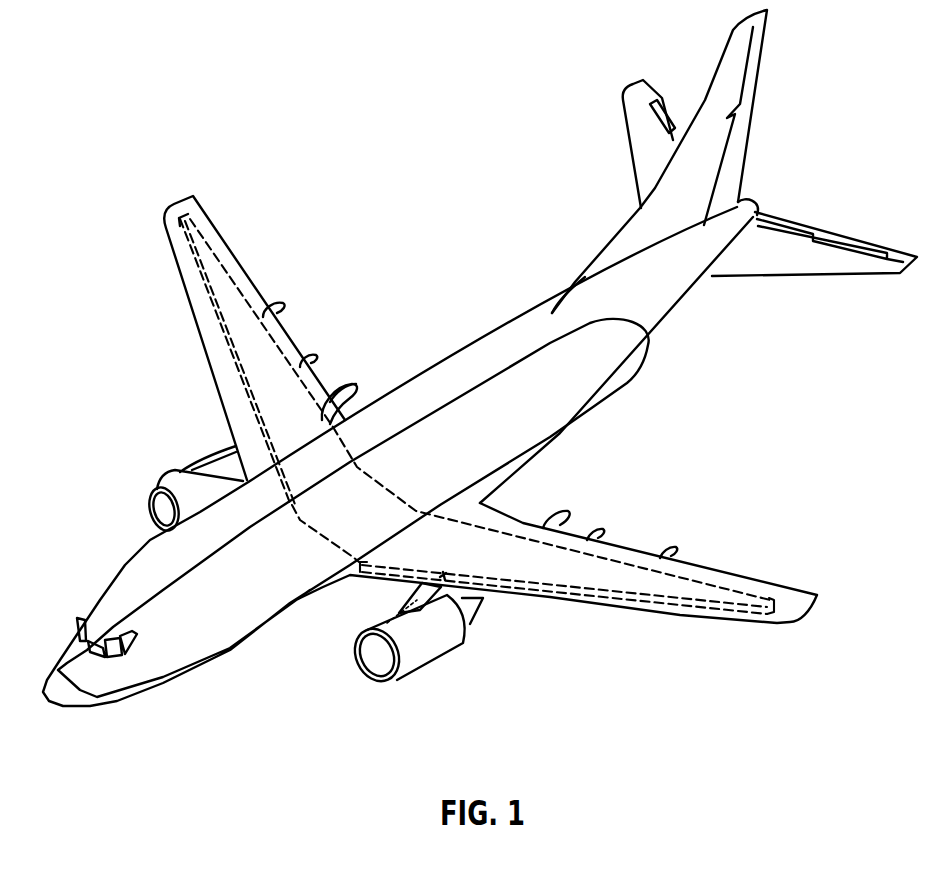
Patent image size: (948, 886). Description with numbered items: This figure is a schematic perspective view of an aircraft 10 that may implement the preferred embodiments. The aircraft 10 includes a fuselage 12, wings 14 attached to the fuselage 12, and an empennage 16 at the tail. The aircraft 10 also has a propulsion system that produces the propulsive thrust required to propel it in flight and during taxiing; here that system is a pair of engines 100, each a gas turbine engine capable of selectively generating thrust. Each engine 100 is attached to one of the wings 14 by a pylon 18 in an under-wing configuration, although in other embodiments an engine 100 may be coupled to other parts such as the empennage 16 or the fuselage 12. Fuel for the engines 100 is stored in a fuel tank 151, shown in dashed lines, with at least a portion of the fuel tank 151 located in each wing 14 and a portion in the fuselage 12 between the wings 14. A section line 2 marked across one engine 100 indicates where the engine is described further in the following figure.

The aircraft 10 is at (480, 358).
The fuselage 12 is at (535, 432).
The wings 14 is at (174, 250).
The empennage 16 is at (760, 144).
The pylon 18 is at (470, 622).
The engine 100 is at (448, 664).
The fuel tank 151 is at (620, 565).
The section line 2- 2 is at (461, 568).